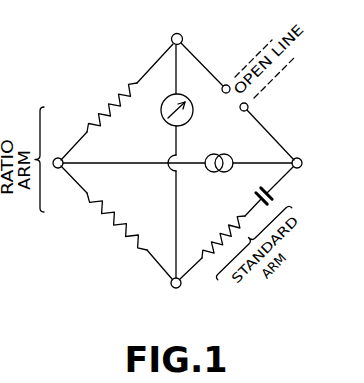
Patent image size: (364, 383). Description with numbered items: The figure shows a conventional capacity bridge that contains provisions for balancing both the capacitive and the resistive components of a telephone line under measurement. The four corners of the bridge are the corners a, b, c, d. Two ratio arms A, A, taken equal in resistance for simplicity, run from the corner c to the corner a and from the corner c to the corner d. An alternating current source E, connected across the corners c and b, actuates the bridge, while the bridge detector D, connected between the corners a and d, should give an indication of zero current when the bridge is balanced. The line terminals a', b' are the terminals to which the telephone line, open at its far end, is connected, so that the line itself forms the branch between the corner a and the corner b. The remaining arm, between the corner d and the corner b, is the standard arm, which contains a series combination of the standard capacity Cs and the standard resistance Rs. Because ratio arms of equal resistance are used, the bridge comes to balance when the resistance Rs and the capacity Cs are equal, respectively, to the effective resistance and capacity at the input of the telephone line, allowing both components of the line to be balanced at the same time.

The bridge corner a is at (178, 32).
The line terminal a' is at (226, 81).
The bridge corner b is at (303, 163).
The line terminal b' is at (249, 108).
The bridge corner c is at (55, 171).
The bridge corner d is at (178, 290).
The ratio arm A is at (117, 166).
The bridge detector D is at (180, 116).
The alternating current source E is at (219, 156).
The standard arm resistance Rs is at (223, 237).
The standard arm capacity Cs is at (267, 191).